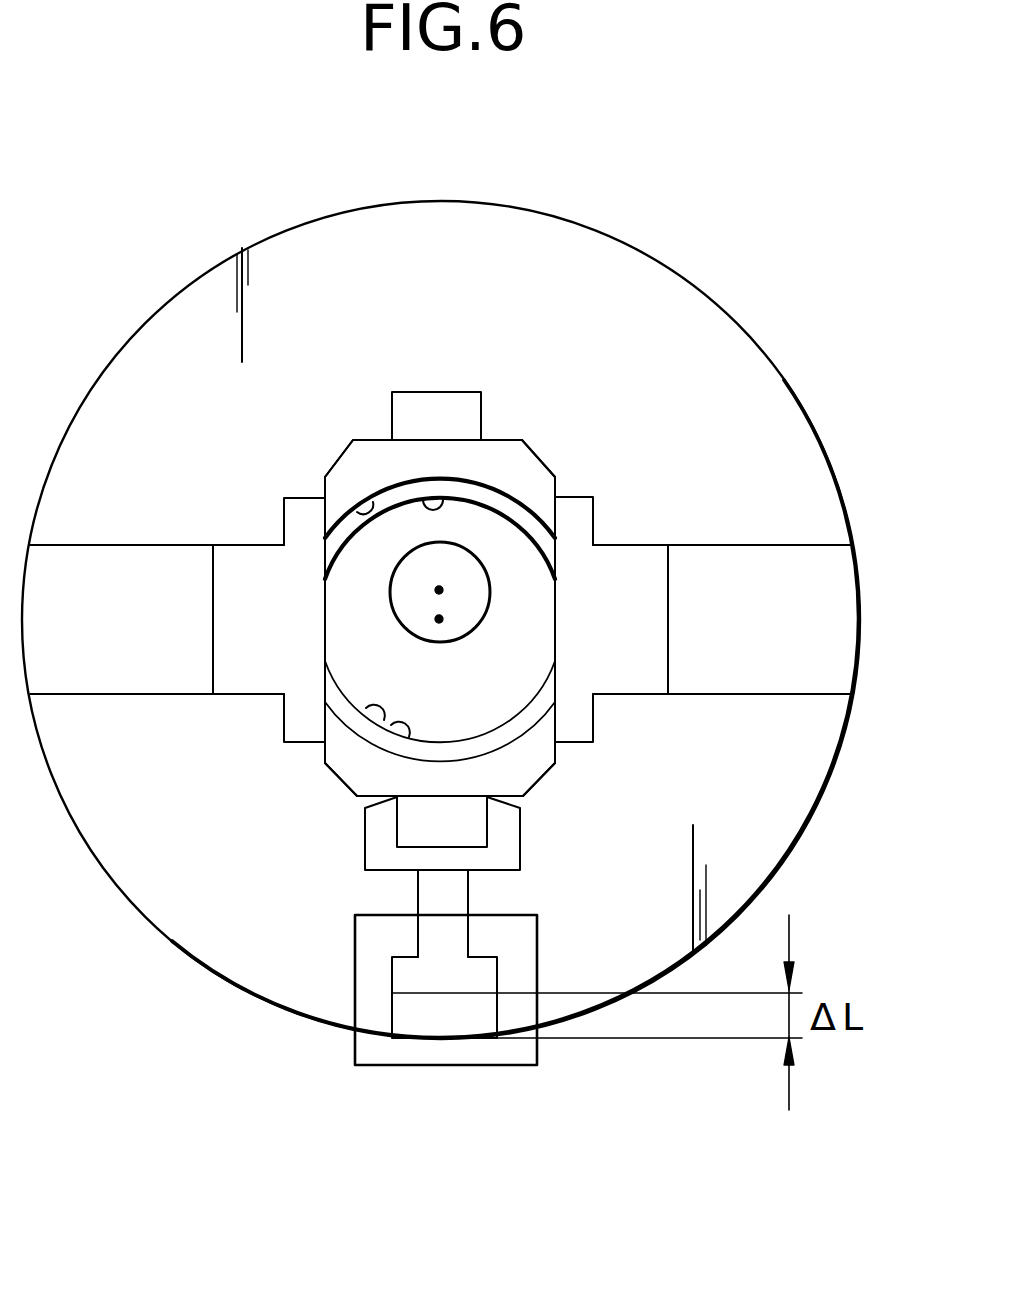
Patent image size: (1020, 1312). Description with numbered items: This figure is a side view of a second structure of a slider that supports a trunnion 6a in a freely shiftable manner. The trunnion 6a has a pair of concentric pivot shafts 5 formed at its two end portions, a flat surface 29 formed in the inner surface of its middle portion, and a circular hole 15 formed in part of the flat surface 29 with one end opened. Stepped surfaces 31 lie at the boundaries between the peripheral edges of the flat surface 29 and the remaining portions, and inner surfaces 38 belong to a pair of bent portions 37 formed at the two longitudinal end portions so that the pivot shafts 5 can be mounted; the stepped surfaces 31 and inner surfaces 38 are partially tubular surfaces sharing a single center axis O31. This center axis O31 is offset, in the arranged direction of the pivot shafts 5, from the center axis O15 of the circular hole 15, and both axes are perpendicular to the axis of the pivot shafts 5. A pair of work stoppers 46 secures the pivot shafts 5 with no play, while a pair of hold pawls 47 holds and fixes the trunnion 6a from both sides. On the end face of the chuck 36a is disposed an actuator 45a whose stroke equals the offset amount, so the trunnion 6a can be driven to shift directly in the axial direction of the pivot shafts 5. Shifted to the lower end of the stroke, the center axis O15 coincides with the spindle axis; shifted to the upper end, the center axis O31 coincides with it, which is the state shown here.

The chuck 36a is at (678, 298).
The flat surface 29 is at (537, 633).
The bent portions 37 is at (537, 462).
The trunnion 6a is at (365, 468).
The hold pawls 47 is at (248, 683).
The pivot shafts 5 is at (455, 408).
The inner surfaces 38 is at (357, 512).
The stepped surfaces 31 is at (423, 500).
The circular hole 15 is at (484, 582).
The center axis of the circular hole O15 is at (439, 590).
The center axis of the stepped surfaces and inner surfaces O31 is at (439, 619).
The work stoppers 46 is at (377, 835).
The actuator 45a is at (378, 1052).